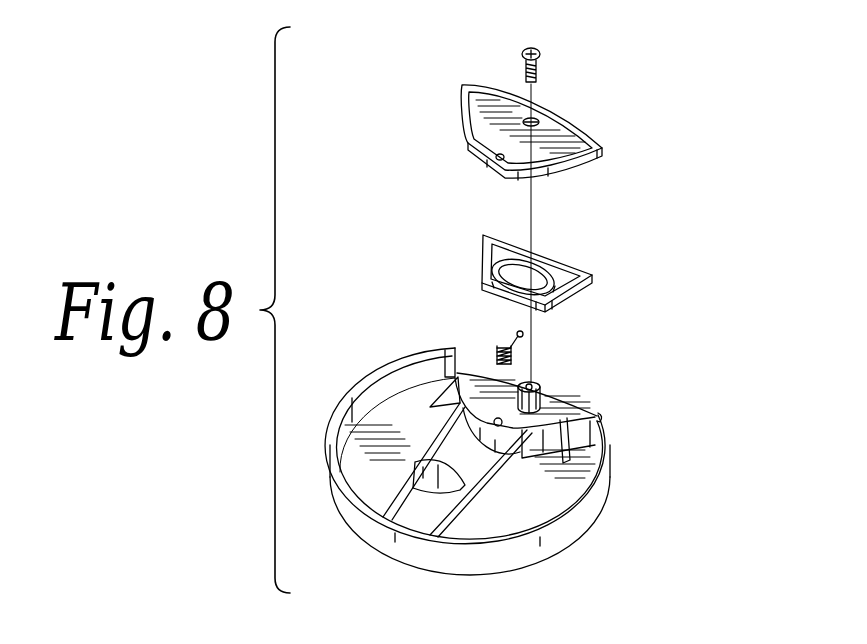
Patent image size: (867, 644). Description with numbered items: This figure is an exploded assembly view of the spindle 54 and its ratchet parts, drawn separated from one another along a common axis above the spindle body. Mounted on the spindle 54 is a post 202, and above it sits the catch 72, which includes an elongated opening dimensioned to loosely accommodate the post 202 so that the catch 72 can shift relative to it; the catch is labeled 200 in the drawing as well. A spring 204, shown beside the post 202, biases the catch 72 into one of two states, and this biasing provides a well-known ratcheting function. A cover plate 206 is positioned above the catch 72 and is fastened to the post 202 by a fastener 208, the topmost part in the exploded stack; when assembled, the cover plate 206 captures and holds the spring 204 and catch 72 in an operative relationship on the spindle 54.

The spindle 54 is at (684, 282).
The catch 72 is at (594, 274).
The frame 200 is at (505, 267).
The post 202 is at (553, 392).
The spring 204 is at (498, 343).
The cover plate 206 is at (590, 126).
The fastener 208 is at (538, 47).